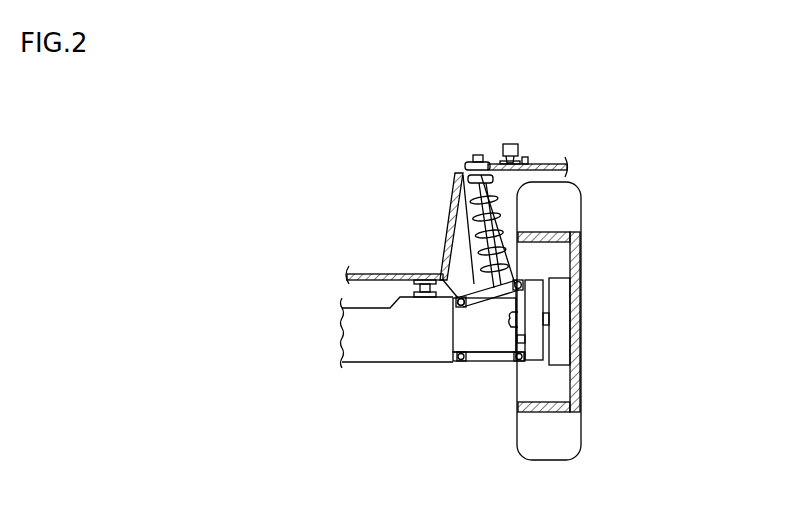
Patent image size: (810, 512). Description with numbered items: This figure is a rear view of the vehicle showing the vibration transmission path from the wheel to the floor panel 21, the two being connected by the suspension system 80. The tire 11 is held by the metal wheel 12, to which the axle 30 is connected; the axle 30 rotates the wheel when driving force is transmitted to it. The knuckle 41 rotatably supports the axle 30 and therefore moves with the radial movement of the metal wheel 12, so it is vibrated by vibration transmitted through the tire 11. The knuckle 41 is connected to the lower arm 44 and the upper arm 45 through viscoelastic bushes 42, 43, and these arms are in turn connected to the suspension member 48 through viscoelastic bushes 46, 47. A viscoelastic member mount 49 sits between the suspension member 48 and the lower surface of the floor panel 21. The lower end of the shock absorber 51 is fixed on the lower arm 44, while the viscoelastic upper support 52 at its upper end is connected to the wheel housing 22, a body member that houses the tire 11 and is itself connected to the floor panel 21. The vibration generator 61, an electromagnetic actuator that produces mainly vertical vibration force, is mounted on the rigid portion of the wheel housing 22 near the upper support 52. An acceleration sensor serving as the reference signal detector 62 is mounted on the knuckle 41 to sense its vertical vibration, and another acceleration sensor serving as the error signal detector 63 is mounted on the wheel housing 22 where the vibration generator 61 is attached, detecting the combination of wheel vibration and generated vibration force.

The tire 11 is at (580, 440).
The metal wheel 12 is at (578, 397).
The floor panel 21 is at (368, 273).
The wheel housing 22 is at (550, 163).
The axle 30 is at (566, 358).
The knuckle 41 is at (537, 300).
The bush 42 is at (518, 363).
The bush 43 is at (520, 284).
The lower arm 44 is at (486, 361).
The upper arm 45 is at (478, 293).
The bush 46 is at (462, 361).
The bush 47 is at (458, 298).
The suspension member 48 is at (377, 363).
The member mount 49 is at (424, 298).
The shock absorber 51 is at (473, 190).
The upper support 52 is at (473, 156).
The vibration generator 61 is at (513, 143).
The reference signal detector 62 is at (522, 338).
The error signal detector 63 is at (527, 157).
The suspension system 80 is at (357, 373).